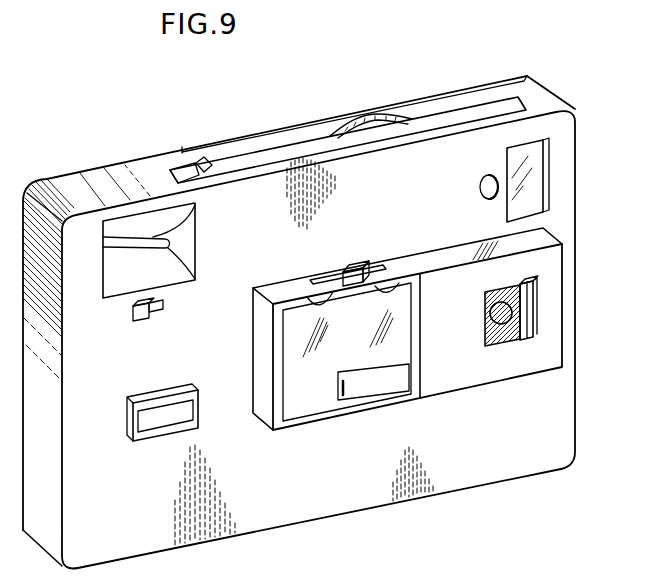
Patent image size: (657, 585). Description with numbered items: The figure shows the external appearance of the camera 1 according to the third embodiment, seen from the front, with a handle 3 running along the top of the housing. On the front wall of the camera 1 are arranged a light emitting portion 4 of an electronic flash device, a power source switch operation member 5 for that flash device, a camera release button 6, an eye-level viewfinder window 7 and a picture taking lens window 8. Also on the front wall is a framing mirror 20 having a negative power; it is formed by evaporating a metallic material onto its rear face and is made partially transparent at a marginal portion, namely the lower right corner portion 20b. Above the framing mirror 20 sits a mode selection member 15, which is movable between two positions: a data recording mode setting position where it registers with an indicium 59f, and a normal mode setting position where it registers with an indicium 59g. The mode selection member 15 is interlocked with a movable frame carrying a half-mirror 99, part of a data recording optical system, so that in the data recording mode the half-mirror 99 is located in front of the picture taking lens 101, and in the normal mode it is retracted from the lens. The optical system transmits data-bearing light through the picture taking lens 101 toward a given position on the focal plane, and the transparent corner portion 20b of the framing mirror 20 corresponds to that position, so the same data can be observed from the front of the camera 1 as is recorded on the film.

The camera 1 is at (100, 173).
The handle 3 is at (298, 143).
The light emitting portion 4 is at (103, 285).
The power source switch operation member 5 is at (143, 322).
The camera release button 6 is at (158, 418).
The eye-level viewfinder window 7 is at (547, 193).
The picture taking lens window 8 is at (532, 318).
The mode selection member 15 is at (359, 264).
The framing mirror 20 is at (305, 407).
The lower right corner portion 20b is at (341, 403).
The indicium 59f is at (387, 296).
The indicium 59g is at (317, 297).
The half-mirror 99 is at (496, 345).
The picture taking lens 101 is at (527, 283).